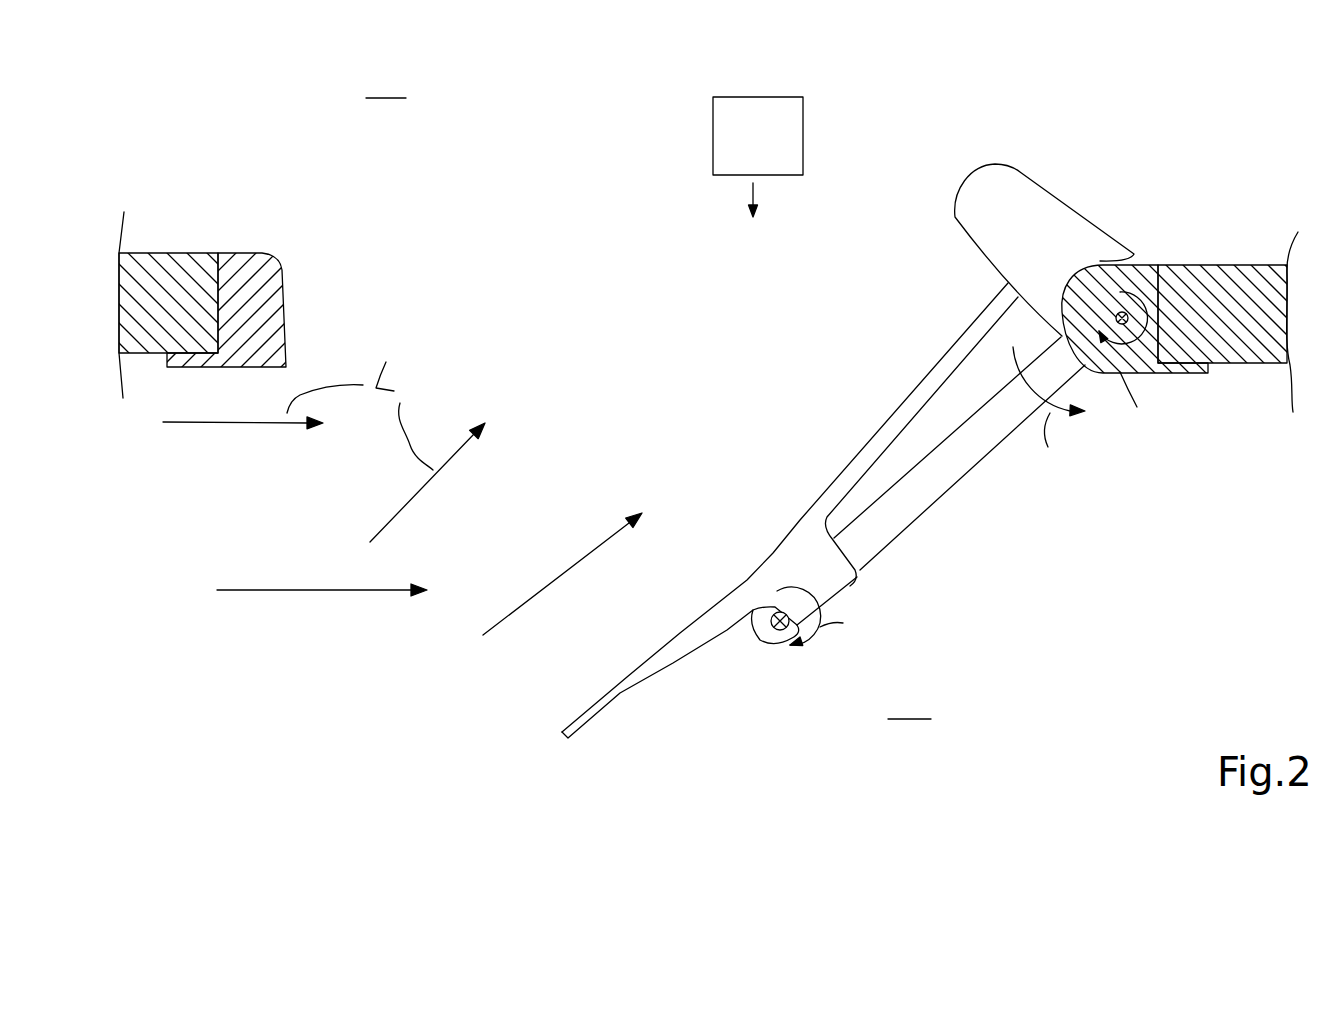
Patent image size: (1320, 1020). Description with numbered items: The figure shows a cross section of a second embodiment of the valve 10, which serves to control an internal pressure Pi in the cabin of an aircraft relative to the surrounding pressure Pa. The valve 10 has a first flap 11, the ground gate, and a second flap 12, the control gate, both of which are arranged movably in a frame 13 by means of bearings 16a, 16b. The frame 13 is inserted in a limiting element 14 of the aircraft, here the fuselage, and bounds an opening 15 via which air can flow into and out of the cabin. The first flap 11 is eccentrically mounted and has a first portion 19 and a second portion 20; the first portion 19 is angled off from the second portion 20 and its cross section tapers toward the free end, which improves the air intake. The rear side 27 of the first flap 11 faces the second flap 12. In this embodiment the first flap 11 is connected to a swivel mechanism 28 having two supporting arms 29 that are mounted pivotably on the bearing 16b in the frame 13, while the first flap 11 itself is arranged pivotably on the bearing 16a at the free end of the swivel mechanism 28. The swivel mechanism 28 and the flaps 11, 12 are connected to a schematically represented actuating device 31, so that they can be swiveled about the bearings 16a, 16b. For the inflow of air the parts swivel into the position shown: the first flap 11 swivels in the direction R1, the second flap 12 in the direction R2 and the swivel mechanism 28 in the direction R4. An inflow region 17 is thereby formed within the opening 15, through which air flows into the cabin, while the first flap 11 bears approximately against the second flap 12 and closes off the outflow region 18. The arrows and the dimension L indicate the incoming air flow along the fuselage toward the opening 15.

The valve 10 is at (896, 185).
The first flap 11 is at (770, 543).
The second flap 12 is at (1053, 205).
The frame 13 is at (247, 273).
The limiting element 14 is at (177, 262).
The opening 15 is at (466, 245).
The bearing 16a is at (767, 645).
The bearing 16b is at (1140, 280).
The inflow region 17 is at (497, 307).
The outflow region 18 is at (957, 399).
The first portion 19 is at (650, 668).
The second portion 20 is at (867, 445).
The rear side 27 is at (862, 512).
The swivel mechanism 28 is at (934, 521).
The supporting arms 29 is at (977, 450).
The actuating device 31 is at (758, 157).
The length L is at (360, 416).
The internal pressure Pi is at (386, 83).
The outer pressure Pa is at (909, 702).
The swivel direction of the first flap R1 is at (833, 620).
The swivel direction of the second flap R2 is at (1139, 368).
The swivel direction of the swivel mechanism R4 is at (1049, 425).